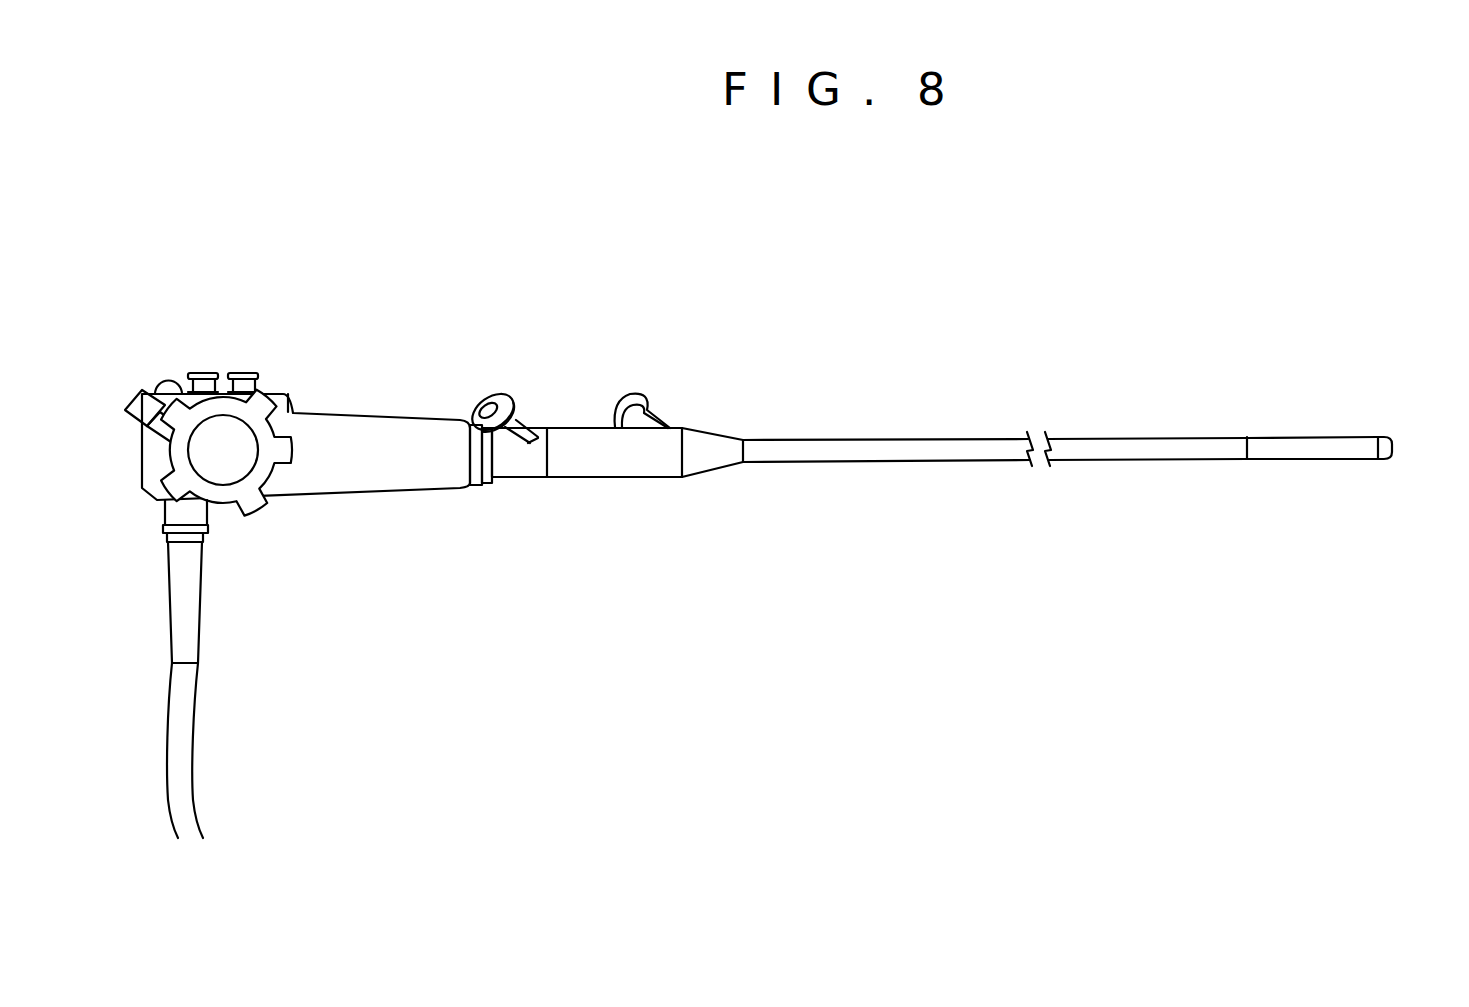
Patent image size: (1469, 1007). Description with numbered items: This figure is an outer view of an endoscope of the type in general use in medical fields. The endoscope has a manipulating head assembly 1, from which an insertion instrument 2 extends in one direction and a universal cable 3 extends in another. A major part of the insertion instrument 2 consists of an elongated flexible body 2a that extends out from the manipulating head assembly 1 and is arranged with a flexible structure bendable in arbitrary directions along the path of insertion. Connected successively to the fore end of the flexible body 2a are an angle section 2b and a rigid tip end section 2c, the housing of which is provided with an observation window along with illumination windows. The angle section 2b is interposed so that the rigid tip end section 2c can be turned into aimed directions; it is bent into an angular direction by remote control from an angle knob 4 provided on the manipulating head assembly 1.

The manipulating head assembly 1 is at (380, 477).
The insertion instrument 2 is at (1100, 453).
The elongated flexible body 2a is at (1102, 458).
The angle section 2b is at (1273, 458).
The rigid tip end section 2c is at (1363, 458).
The universal cable 3 is at (185, 738).
The angle knob 4 is at (272, 423).